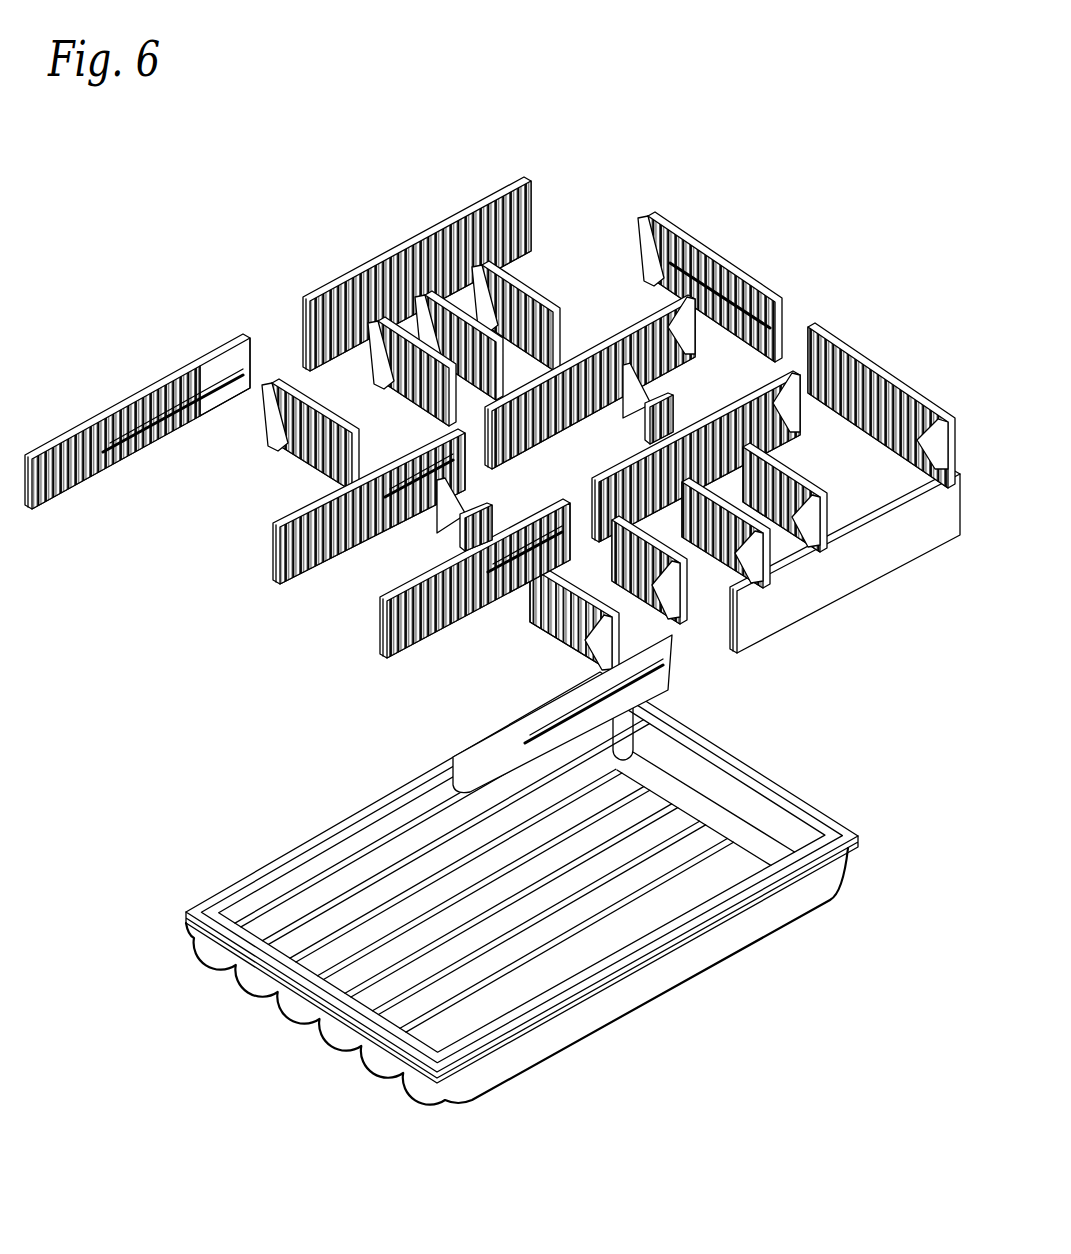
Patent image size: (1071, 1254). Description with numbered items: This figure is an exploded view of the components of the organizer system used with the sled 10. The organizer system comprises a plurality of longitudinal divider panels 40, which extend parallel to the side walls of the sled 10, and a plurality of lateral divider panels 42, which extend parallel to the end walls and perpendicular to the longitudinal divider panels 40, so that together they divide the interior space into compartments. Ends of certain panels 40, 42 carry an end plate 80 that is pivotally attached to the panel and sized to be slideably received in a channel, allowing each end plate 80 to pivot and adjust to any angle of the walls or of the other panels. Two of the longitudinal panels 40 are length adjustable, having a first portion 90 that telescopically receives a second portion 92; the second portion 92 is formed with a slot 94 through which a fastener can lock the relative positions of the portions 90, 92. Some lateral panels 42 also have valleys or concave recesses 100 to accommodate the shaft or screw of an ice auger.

The sled 10 is at (693, 995).
The longitudinal divider panel 40 is at (463, 200).
The lateral divider panel 42 is at (690, 240).
The end plate 80 is at (745, 278).
The first portion 90 is at (392, 250).
The second portion 92 is at (208, 355).
The slot 94 is at (165, 437).
The concave recess 100 is at (662, 395).